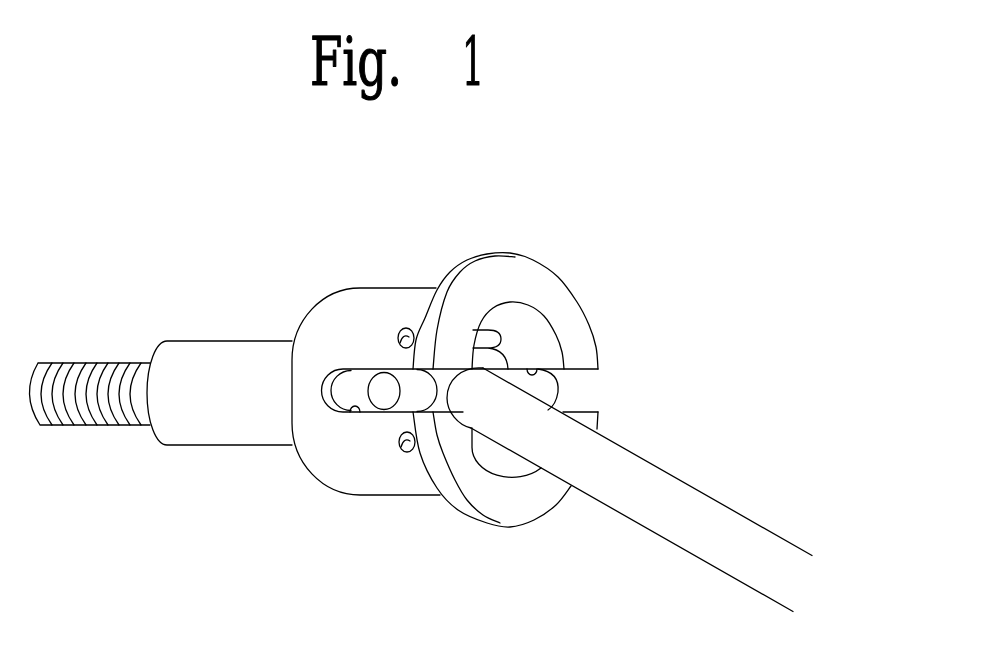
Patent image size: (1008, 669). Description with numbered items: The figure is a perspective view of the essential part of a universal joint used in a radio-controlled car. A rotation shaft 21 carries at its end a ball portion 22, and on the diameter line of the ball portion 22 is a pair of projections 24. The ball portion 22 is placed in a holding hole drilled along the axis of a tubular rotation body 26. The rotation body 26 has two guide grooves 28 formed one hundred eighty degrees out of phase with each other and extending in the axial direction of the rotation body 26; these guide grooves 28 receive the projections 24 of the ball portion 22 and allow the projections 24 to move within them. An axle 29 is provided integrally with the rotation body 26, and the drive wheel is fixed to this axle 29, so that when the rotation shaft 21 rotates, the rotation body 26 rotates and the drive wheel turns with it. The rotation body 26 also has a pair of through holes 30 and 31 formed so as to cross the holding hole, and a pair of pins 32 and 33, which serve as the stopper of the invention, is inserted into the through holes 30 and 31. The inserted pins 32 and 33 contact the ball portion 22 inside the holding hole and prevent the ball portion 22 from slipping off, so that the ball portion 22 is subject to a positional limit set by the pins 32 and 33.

The rotation shaft 21 is at (643, 517).
The ball portion 22 is at (503, 360).
The projections 24 is at (380, 412).
The rotation body 26 is at (350, 308).
The guide grooves 28 is at (357, 410).
The axle 29 is at (188, 362).
The through hole 30 is at (403, 328).
The through hole 31 is at (408, 452).
The pin 32 is at (483, 335).
The pin 33 is at (484, 447).